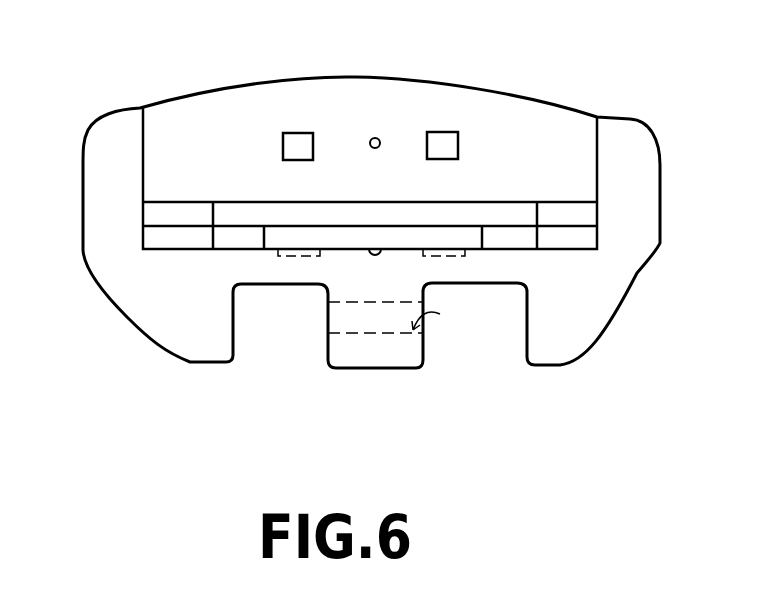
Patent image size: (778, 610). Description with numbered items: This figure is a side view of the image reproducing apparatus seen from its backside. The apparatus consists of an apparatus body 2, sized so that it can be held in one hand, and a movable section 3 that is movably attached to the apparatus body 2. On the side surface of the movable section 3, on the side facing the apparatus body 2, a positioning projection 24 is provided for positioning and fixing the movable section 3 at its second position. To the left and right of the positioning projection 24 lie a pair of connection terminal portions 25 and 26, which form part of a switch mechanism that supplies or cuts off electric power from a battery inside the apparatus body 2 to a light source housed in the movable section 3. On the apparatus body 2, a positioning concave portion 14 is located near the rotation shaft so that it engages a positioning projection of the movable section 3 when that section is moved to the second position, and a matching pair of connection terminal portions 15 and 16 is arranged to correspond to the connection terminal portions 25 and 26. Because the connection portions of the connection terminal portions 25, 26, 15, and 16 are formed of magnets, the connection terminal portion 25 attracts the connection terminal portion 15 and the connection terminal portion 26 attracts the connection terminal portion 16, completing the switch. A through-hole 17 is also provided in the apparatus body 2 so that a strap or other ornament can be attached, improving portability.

The apparatus body 2 is at (635, 272).
The movable section 3 is at (535, 98).
The positioning concave portion 14 is at (375, 256).
The connection terminal portion 15 is at (297, 257).
The connection terminal portion 16 is at (450, 257).
The through-hole 17 is at (442, 316).
The positioning projection 24 is at (376, 138).
The connection terminal portion 25 is at (297, 143).
The connection terminal portion 26 is at (447, 140).